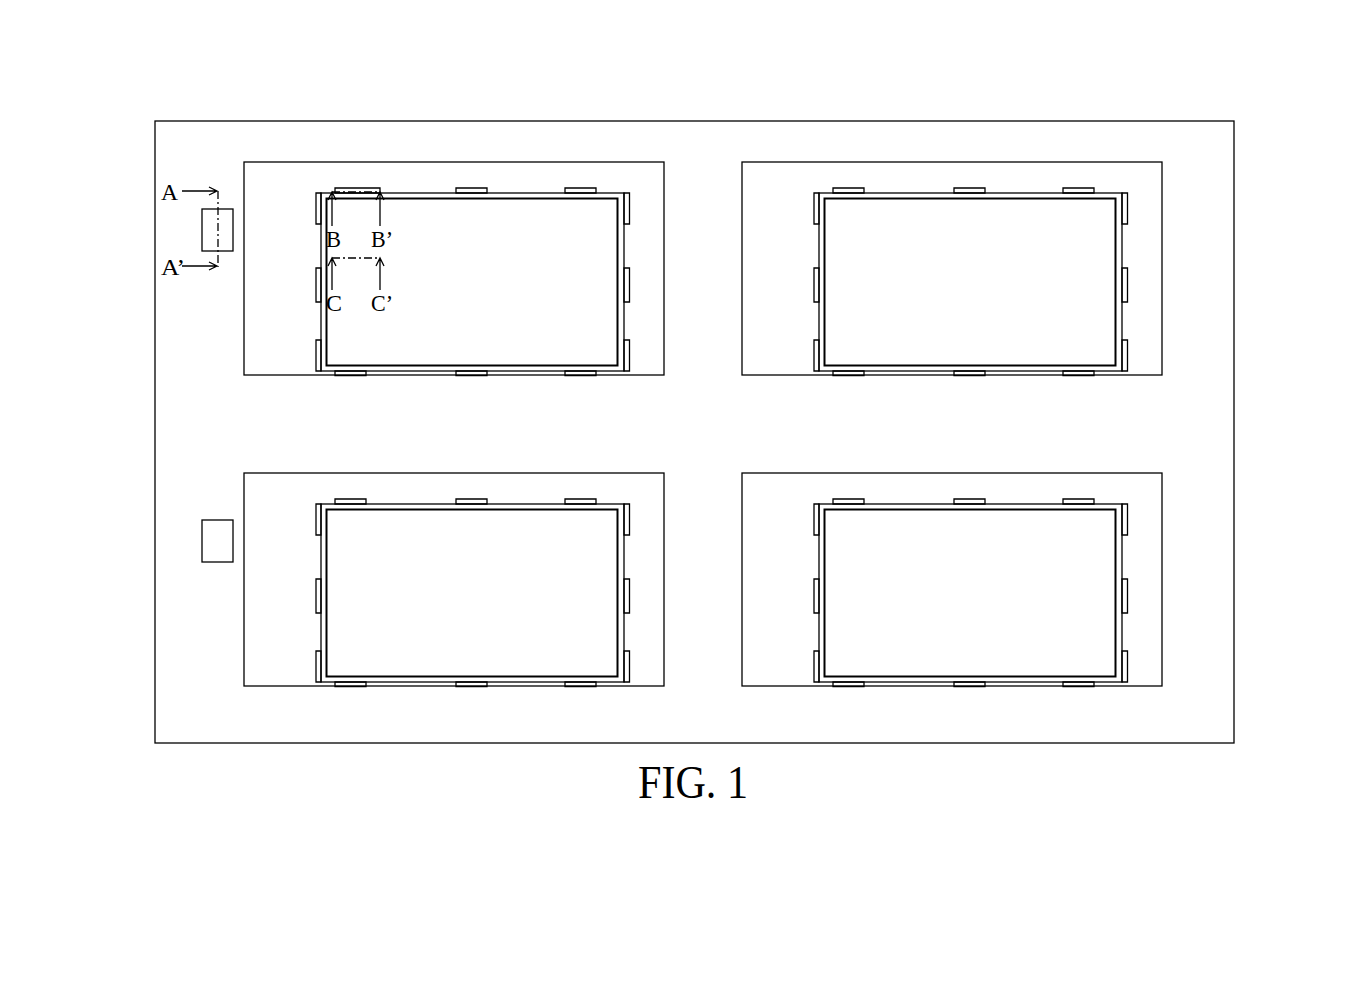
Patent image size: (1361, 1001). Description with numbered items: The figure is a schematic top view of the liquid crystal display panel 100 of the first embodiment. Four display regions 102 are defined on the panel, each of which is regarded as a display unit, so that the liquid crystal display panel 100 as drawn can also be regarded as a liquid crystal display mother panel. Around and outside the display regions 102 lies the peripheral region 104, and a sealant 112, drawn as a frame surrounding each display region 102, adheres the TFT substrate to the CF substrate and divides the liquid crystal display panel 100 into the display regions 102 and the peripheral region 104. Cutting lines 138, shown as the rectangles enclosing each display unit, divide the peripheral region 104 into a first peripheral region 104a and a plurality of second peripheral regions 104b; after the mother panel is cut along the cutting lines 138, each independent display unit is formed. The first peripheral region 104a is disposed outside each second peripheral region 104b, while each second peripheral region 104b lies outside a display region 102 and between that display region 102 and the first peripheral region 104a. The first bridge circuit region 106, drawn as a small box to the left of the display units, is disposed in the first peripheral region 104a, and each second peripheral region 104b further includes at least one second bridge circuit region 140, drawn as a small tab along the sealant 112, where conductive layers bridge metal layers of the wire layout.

The liquid crystal display panel 100 is at (1252, 95).
The display region 102 is at (578, 333).
The peripheral region 104 is at (695, 62).
The first peripheral region 104a is at (582, 130).
The second peripheral region 104b is at (632, 172).
The first bridge circuit region 106 is at (202, 231).
The sealant 112 is at (623, 250).
The cutting line 138 is at (430, 160).
The second bridge circuit region 140 is at (349, 188).